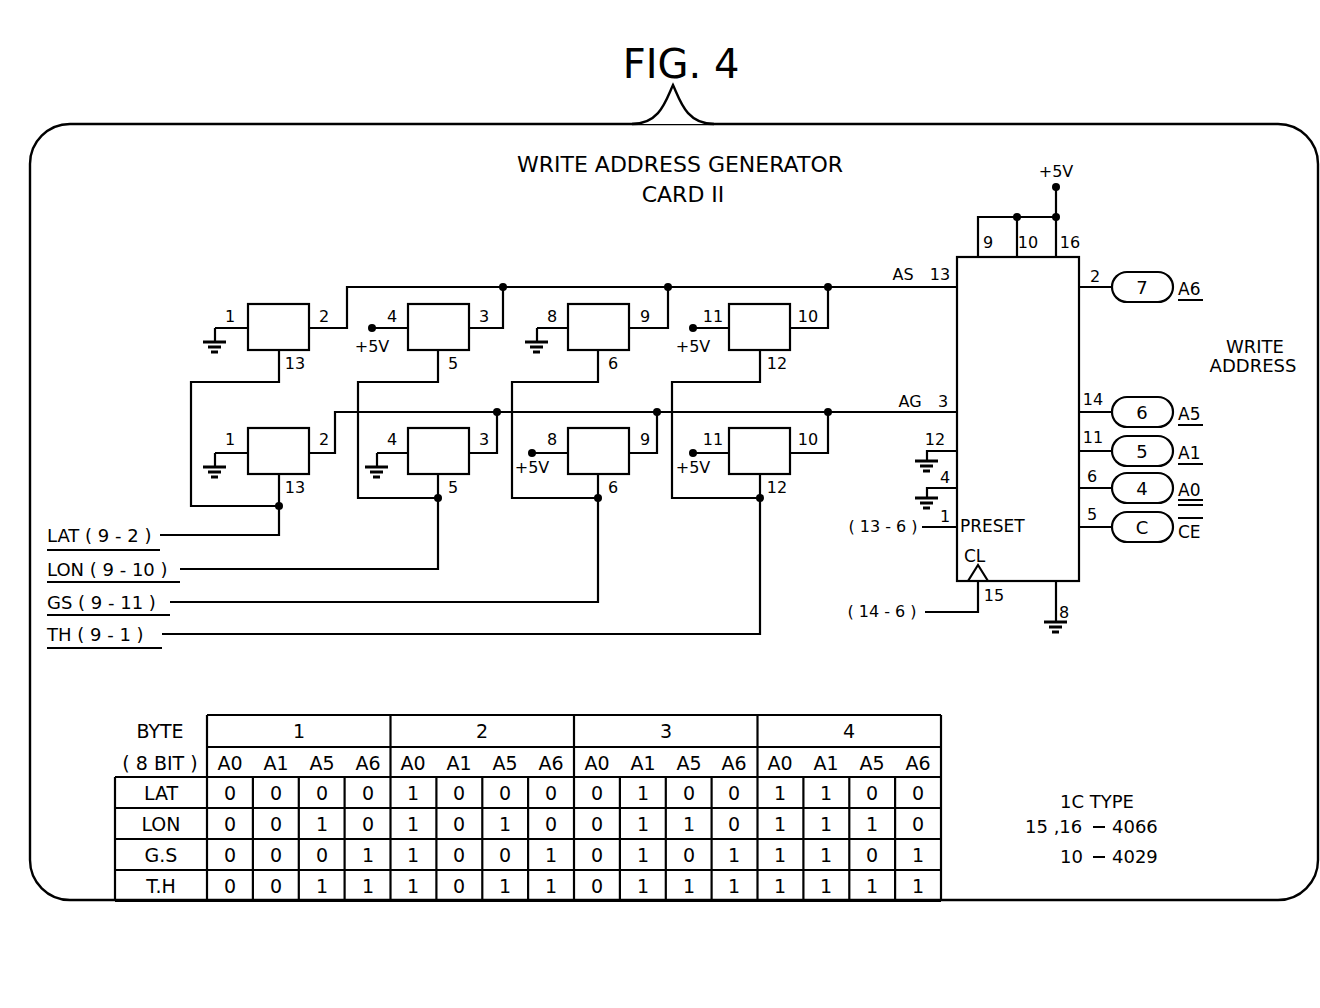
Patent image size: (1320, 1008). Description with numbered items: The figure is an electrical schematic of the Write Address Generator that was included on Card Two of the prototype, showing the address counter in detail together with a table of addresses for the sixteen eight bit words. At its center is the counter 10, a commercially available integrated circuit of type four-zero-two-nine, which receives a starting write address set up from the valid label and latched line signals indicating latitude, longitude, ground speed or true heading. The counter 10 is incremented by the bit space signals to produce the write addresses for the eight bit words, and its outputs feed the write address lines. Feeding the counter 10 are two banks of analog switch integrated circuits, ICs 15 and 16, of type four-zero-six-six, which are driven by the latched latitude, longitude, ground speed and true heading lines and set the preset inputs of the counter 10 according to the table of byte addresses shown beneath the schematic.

The counter 10 is at (1018, 419).
The 4066 analog switch IC 15 is at (519, 451).
The 4066 analog switch IC 16 is at (519, 327).